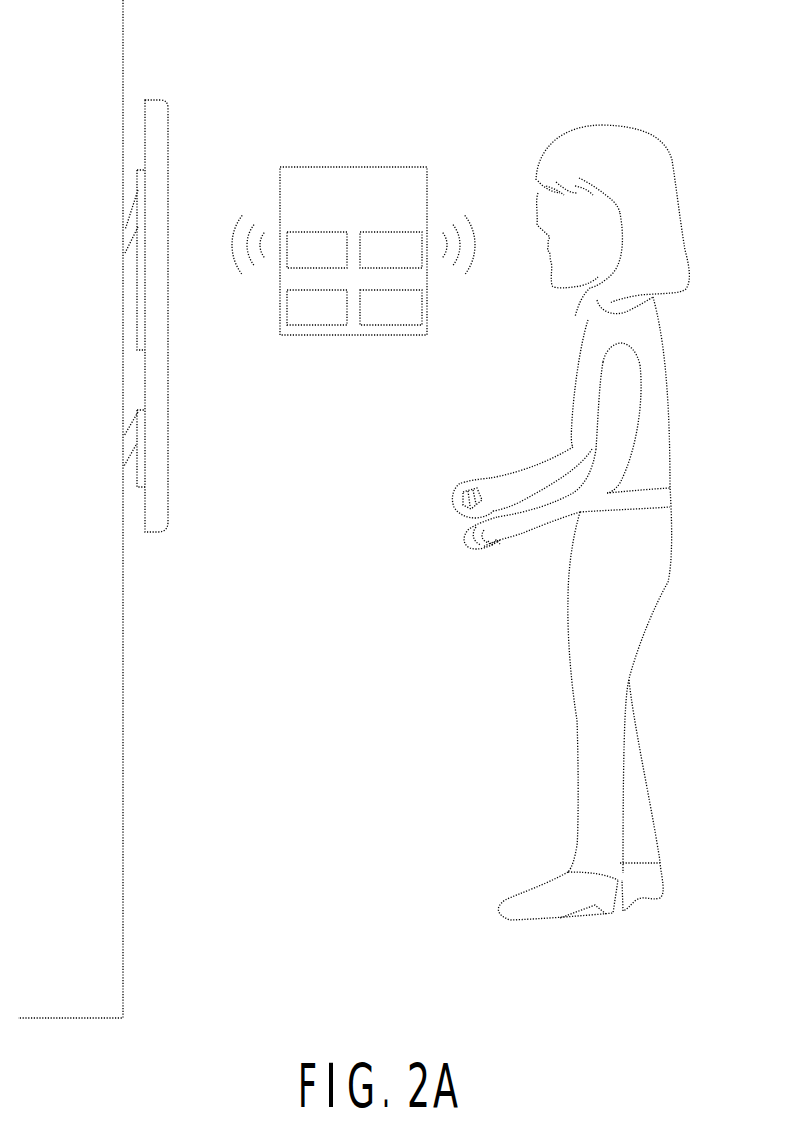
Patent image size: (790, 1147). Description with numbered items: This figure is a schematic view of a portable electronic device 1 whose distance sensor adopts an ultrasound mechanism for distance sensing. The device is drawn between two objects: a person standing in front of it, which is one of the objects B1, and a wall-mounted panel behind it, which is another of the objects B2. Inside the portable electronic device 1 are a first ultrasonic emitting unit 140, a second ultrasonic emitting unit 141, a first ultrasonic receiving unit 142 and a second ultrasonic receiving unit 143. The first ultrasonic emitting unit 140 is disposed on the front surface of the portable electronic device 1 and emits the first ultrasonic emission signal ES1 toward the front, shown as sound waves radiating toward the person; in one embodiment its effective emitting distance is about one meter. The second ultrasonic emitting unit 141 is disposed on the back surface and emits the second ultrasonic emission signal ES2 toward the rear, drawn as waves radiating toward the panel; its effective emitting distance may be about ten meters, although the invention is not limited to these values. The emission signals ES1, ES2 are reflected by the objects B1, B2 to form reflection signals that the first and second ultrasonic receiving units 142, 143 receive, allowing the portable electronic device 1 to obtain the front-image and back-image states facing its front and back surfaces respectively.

The portable electronic device 1 is at (361, 197).
The first ultrasonic emitting unit 140 is at (408, 264).
The second ultrasonic emitting unit 141 is at (333, 264).
The first ultrasonic receiving unit 142 is at (408, 322).
The second ultrasonic receiving unit 143 is at (333, 322).
The object B1 is at (600, 124).
The object B2 is at (168, 137).
The first ultrasonic emission signal ES1 is at (456, 229).
The second ultrasonic emission signal ES2 is at (251, 229).